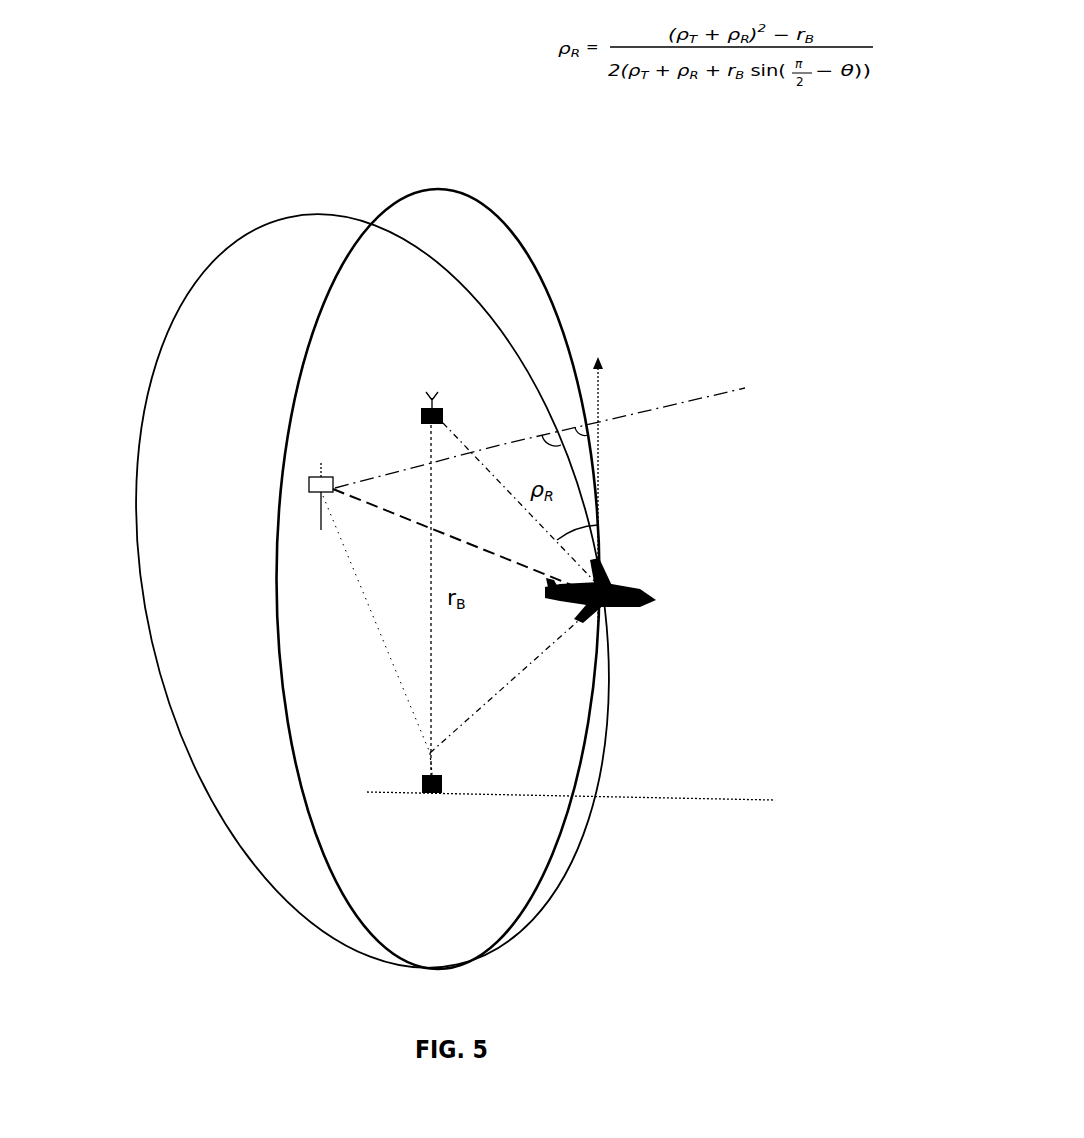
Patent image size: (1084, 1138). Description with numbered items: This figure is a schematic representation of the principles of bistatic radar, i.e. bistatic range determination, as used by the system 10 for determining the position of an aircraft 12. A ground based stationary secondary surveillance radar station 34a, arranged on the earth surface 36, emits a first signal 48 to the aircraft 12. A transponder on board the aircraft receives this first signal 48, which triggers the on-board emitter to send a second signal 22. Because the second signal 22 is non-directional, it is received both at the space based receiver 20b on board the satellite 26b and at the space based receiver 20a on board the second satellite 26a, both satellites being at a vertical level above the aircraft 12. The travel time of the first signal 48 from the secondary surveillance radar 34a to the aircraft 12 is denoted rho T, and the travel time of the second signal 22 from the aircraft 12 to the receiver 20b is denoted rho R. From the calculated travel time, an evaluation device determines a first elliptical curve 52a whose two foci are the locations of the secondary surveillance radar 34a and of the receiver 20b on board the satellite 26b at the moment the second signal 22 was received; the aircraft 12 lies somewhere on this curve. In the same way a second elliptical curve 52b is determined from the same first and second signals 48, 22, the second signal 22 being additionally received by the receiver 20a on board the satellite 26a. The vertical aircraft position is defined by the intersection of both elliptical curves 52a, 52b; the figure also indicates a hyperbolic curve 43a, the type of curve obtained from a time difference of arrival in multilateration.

The system for determining the position of an aircraft 10 is at (96, 110).
The aircraft 12 is at (637, 591).
The receiver 20a is at (327, 517).
The receiver 20b is at (445, 411).
The second signal 22 is at (500, 487).
The satellite 26a is at (294, 443).
The satellite 26b is at (404, 375).
The secondary surveillance radar station 34a is at (445, 788).
The earth surface 36 is at (698, 797).
The hyperbolic curve 43a is at (745, 388).
The first signal 48 is at (536, 658).
The first elliptical curve 52a is at (541, 268).
The second elliptical curve 52b is at (198, 292).